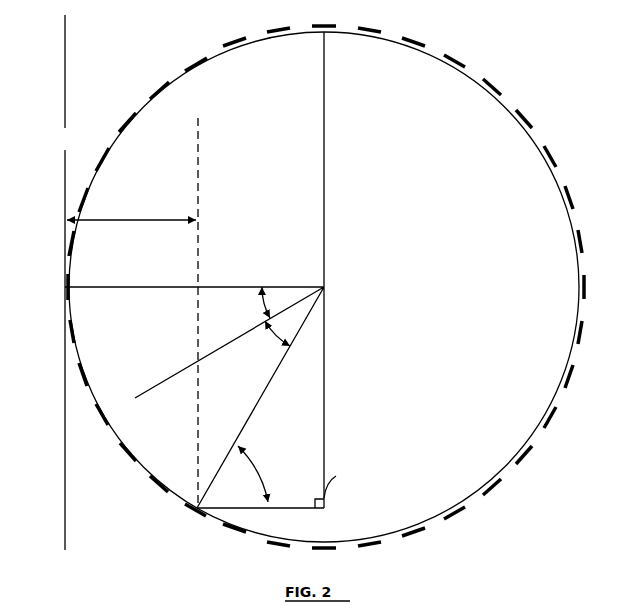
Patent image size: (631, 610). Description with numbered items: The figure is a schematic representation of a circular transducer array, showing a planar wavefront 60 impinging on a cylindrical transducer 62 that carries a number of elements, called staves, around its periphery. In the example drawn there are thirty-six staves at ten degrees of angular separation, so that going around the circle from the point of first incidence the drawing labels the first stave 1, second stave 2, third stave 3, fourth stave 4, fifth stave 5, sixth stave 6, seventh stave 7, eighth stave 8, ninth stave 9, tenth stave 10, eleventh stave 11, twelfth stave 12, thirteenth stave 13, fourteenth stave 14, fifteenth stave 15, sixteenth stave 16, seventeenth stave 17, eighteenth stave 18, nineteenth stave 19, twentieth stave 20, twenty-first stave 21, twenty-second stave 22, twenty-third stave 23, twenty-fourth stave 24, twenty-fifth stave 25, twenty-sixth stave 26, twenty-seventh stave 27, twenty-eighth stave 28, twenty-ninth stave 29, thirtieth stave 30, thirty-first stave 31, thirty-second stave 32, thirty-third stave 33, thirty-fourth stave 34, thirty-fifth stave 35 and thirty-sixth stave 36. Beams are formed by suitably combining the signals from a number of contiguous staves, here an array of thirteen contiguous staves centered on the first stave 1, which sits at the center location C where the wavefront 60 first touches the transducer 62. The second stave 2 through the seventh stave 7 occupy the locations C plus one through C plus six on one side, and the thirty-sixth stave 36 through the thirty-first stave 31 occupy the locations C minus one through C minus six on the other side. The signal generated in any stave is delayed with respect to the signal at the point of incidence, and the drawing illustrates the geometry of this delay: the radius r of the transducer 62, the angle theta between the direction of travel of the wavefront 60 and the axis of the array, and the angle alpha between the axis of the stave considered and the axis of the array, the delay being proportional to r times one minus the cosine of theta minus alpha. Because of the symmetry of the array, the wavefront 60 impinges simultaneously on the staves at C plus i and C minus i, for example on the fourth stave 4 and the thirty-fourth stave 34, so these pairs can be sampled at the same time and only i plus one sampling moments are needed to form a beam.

The planar wavefront 60 is at (65, 62).
The cylindrical transducer 62 is at (302, 287).
The stave S1 1 is at (69, 287).
The stave S2 2 is at (73, 243).
The stave S3 3 is at (84, 200).
The stave S4 4 is at (103, 160).
The stave S5 5 is at (129, 123).
The stave S6 6 is at (160, 92).
The stave S7 7 is at (197, 66).
The stave S8 8 is at (237, 47).
The stave S9 9 is at (280, 36).
The stave S10 10 is at (324, 32).
The stave S11 11 is at (368, 36).
The stave S12 12 is at (411, 47).
The stave S13 13 is at (452, 66).
The stave S14 14 is at (488, 92).
The stave S15 15 is at (519, 123).
The stave S16 16 is at (545, 160).
The stave S17 17 is at (564, 200).
The stave S18 18 is at (575, 243).
The stave S19 19 is at (579, 287).
The stave S20 20 is at (575, 331).
The stave S21 21 is at (564, 374).
The stave S22 22 is at (545, 414).
The stave S23 23 is at (519, 451).
The stave S24 24 is at (488, 482).
The stave S25 25 is at (452, 508).
The stave S26 26 is at (411, 527).
The stave S27 27 is at (368, 538).
The stave S28 28 is at (324, 542).
The stave S29 29 is at (280, 538).
The stave S30 30 is at (237, 527).
The stave S31 31 is at (197, 508).
The stave S32 32 is at (160, 482).
The stave S33 33 is at (129, 451).
The stave S34 34 is at (103, 414).
The stave S35 35 is at (84, 374).
The stave S36 36 is at (73, 331).